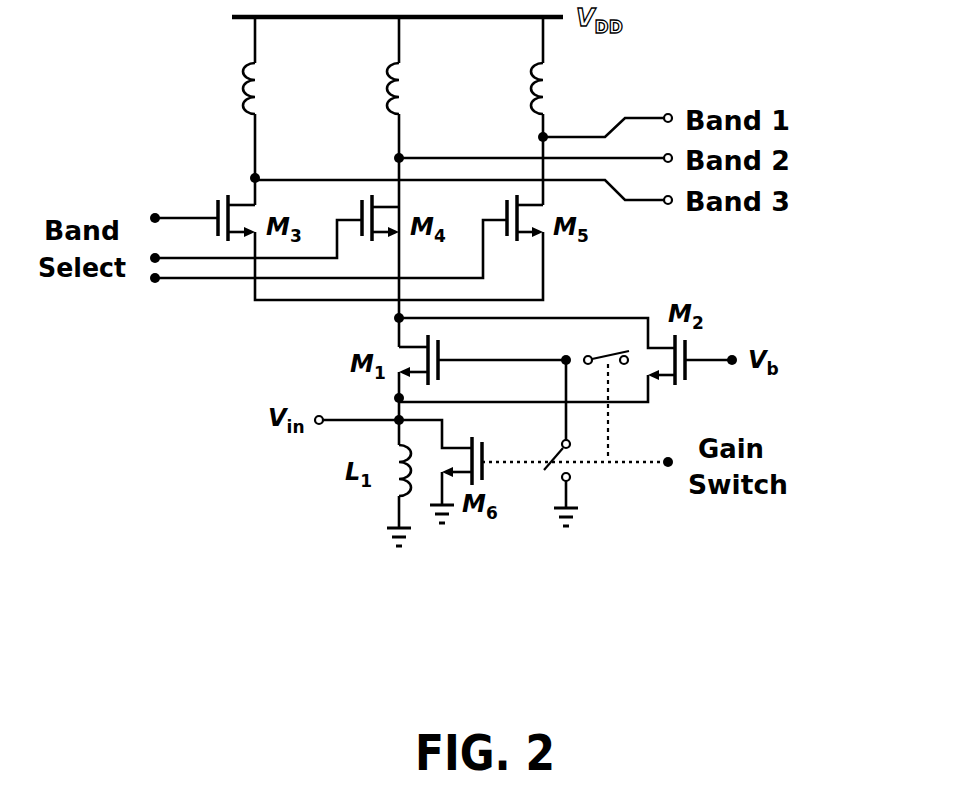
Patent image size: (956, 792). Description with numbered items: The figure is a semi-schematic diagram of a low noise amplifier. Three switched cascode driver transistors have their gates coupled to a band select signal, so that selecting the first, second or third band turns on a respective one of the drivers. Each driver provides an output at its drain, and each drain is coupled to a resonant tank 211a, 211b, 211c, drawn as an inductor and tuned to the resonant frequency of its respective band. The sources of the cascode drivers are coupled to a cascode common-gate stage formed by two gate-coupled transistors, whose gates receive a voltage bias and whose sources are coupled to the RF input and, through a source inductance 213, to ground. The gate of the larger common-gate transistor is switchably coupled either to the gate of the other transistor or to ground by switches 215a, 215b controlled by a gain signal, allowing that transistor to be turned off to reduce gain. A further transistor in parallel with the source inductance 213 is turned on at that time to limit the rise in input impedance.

The resonant tank 211a is at (240, 80).
The resonant tank 211b is at (386, 78).
The resonant tank 211c is at (530, 72).
The source inductance 213 is at (392, 492).
The switch 215a is at (570, 476).
The switch 215b is at (608, 356).